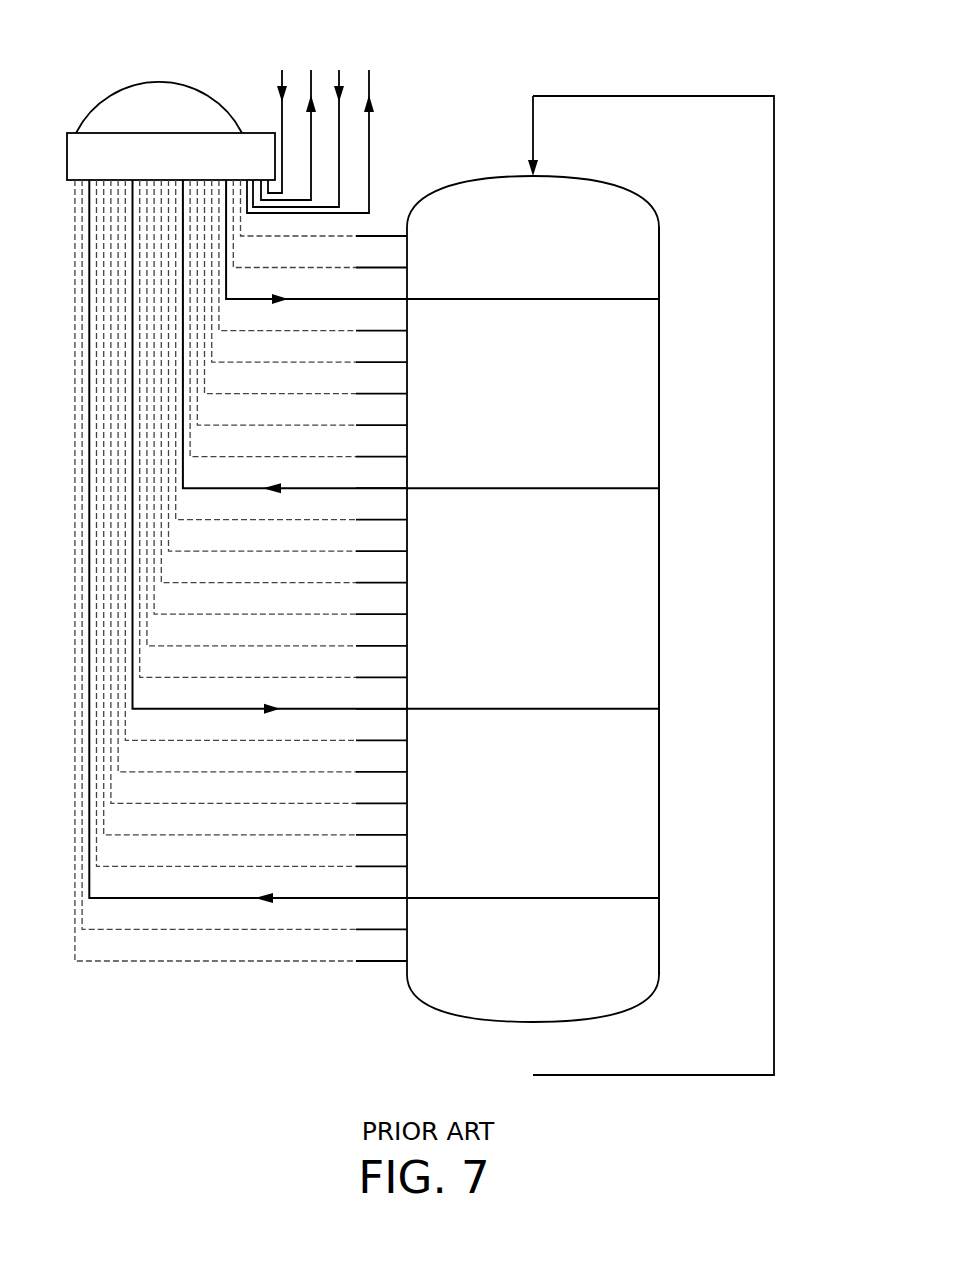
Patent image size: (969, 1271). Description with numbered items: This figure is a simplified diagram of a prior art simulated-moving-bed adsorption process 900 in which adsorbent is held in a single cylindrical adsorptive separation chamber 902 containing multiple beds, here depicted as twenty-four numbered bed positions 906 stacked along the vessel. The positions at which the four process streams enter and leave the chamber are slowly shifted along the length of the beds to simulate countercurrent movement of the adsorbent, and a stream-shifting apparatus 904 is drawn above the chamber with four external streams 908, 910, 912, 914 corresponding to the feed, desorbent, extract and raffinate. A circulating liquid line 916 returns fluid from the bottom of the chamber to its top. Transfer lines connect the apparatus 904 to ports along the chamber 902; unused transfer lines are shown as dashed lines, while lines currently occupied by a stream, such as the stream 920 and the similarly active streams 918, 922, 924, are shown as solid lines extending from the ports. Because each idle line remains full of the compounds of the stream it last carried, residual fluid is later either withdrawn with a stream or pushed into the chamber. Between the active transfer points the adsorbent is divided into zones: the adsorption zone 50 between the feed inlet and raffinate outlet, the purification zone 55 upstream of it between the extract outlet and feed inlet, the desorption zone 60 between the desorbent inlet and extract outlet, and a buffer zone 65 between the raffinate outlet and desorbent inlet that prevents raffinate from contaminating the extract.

The distillation system 900 is at (745, 36).
The adsorptive separation chamber 902 is at (658, 162).
The feed/product header 904 is at (171, 131).
The trays 906 is at (380, 990).
The inlet stream 908 is at (277, 96).
The outlet stream 910 is at (308, 98).
The inlet stream 912 is at (345, 96).
The outlet stream 914 is at (371, 100).
The recycle stream to column top 916 is at (531, 114).
The feed line to tray 3 918 is at (281, 303).
The stream 920 is at (275, 493).
The feed line to tray 16 922 is at (272, 713).
The draw line from tray 22 924 is at (265, 902).
The buffer zone 65 is at (643, 262).
The desorption zone 60 is at (643, 393).
The purification zone 55 is at (643, 591).
The adsorption zone 50 is at (643, 798).